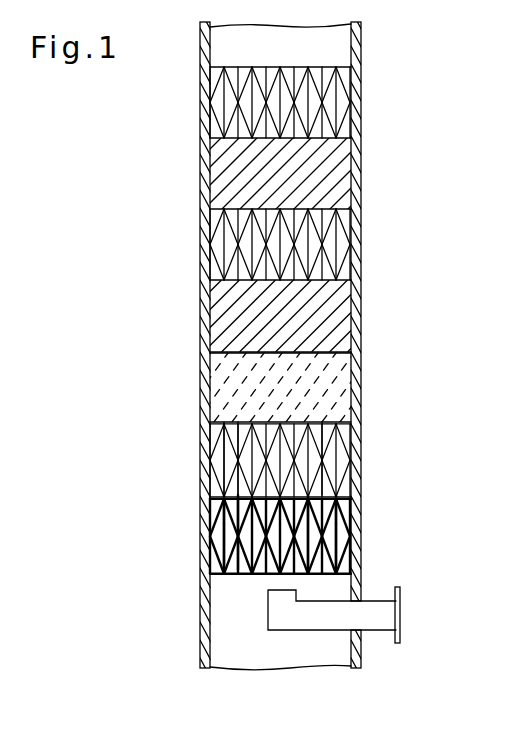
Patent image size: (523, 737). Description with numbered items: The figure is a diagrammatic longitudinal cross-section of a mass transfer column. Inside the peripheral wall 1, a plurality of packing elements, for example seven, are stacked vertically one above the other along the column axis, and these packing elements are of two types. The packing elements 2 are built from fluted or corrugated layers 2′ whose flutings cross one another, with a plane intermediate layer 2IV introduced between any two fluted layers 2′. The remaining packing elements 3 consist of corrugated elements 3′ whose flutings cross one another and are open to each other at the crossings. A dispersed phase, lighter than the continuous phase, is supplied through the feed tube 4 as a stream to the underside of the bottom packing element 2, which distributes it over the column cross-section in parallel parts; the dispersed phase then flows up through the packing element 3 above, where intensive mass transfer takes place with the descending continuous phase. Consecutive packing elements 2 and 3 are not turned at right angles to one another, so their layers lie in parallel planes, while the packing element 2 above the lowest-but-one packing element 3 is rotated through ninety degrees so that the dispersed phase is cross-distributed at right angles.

The peripheral wall 1 is at (363, 293).
The packing element 2 is at (345, 393).
The fluted layer 2′ is at (345, 552).
The plane intermediate layer 2IV is at (342, 565).
The packing element 3 is at (345, 83).
The corrugated element 3′ is at (345, 478).
The feed tube 4 is at (382, 632).